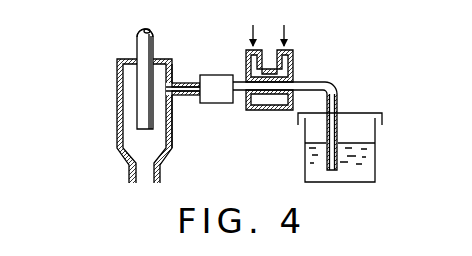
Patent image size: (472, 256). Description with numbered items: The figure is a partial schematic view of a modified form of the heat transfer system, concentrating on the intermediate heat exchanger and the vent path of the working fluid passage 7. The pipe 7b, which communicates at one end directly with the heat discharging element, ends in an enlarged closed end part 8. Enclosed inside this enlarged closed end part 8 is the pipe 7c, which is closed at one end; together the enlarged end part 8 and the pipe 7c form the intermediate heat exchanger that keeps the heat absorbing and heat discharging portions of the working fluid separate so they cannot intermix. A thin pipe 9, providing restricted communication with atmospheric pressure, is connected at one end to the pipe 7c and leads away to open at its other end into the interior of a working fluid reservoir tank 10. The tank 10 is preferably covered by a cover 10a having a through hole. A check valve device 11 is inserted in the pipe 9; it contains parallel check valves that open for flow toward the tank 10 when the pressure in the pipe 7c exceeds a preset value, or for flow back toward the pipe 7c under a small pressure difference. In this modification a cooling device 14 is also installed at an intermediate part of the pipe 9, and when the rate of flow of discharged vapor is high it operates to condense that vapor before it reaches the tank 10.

The working fluid passage 7 is at (116, 164).
The pipe 7b is at (137, 43).
The pipe 7c is at (172, 131).
The enlarged closed end part 8 is at (137, 112).
The thin pipe 9 is at (305, 82).
The working fluid reservoir tank 10 is at (375, 158).
The cover 10a is at (369, 113).
The check valve device 11 is at (212, 75).
The cooling device 14 is at (270, 110).